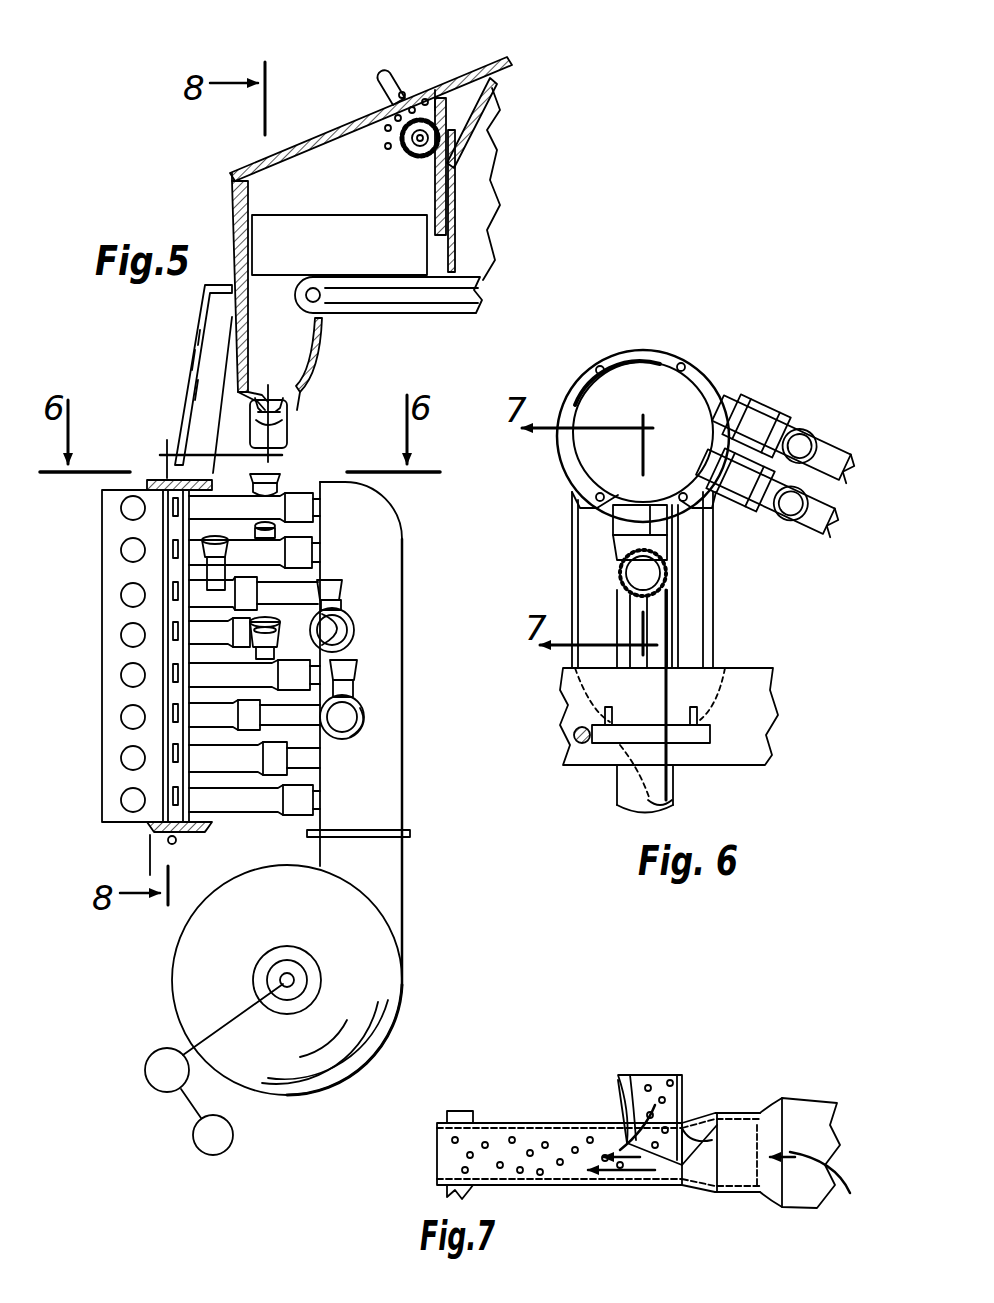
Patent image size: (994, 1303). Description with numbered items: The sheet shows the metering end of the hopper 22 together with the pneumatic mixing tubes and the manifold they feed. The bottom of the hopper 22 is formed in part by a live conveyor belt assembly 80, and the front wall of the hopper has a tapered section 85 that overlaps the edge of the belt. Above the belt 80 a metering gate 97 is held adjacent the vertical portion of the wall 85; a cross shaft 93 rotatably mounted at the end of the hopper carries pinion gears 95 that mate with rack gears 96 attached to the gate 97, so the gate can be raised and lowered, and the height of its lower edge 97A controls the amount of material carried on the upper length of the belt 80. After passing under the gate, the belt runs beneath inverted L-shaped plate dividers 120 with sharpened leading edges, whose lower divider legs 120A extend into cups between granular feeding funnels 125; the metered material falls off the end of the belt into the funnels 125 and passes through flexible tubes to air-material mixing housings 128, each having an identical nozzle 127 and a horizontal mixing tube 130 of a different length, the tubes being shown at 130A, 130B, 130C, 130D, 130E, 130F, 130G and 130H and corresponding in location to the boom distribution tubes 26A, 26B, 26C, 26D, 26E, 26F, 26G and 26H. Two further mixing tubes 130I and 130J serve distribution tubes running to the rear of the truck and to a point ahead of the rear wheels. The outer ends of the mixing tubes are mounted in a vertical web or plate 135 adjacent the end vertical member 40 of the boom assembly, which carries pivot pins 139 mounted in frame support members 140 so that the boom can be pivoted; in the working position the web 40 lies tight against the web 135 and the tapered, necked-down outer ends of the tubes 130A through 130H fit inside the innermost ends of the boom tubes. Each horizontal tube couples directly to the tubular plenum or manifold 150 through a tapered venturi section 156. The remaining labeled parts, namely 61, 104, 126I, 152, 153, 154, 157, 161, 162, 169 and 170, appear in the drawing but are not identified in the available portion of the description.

In FIG. 5, the hopper 22 is at (300, 125).
In FIG. 5, the hopper wall 61 is at (342, 120).
In FIG. 5, the drive shaft 104 is at (412, 95).
In FIG. 5, the rack gears 96 is at (440, 82).
In FIG. 5, the pinion gears 95 is at (380, 140).
In FIG. 5, the cross shaft 93 is at (416, 152).
In FIG. 5, the tapered section 85 is at (470, 120).
In FIG. 5, the metering gate 97 is at (452, 172).
In FIG. 5, the lower edge 97A is at (455, 243).
In FIG. 5, the conveyor belt assembly 80 is at (478, 282).
In FIG. 5, the plate dividers 120 is at (352, 222).
In FIG. 5, the lower divider legs 120A is at (300, 325).
In FIG. 5, the granular feeding funnels 125 is at (292, 386).
In FIG. 5, the seed cup 126I is at (288, 428).
In FIG. 5, the pivot pins 139 is at (157, 475).
In FIG. 6, the pivot pins 139 is at (572, 720).
In FIG. 5, the frame support members 140 is at (232, 858).
In FIG. 6, the frame support members 140 is at (715, 748).
In FIG. 5, the end vertical member 40 is at (117, 822).
In FIG. 5, the vertical web 135 is at (215, 818).
In FIG. 6, the vertical web 135 is at (770, 718).
In FIG. 7, the vertical web 135 is at (456, 1112).
In FIG. 5, the distribution tube 26A is at (120, 801).
In FIG. 5, the distribution tube 26B is at (120, 759).
In FIG. 5, the distribution tube 26C is at (97, 720).
In FIG. 5, the distribution tube 26D is at (120, 677).
In FIG. 5, the distribution tube 26E is at (120, 637).
In FIG. 5, the distribution tube 26F is at (120, 598).
In FIG. 5, the distribution tube 26G is at (120, 551).
In FIG. 5, the distribution tube 26H is at (120, 510).
In FIG. 6, the distribution tube 26H is at (628, 790).
In FIG. 6, the horizontal mixing tube 130 is at (660, 635).
In FIG. 5, the horizontal mixing tube 130A is at (247, 809).
In FIG. 5, the horizontal mixing tube 130B is at (242, 767).
In FIG. 5, the horizontal mixing tube 130C is at (254, 715).
In FIG. 5, the horizontal mixing tube 130D is at (247, 684).
In FIG. 5, the horizontal mixing tube 130E is at (235, 644).
In FIG. 5, the horizontal mixing tube 130F is at (200, 594).
In FIG. 5, the horizontal mixing tube 130G is at (254, 552).
In FIG. 5, the horizontal mixing tube 130H is at (247, 518).
In FIG. 6, the horizontal mixing tube 130H is at (685, 797).
In FIG. 7, the horizontal mixing tube 130H is at (498, 1187).
In FIG. 5, the horizontal mixing tube 130I is at (348, 626).
In FIG. 5, the horizontal mixing tube 130J is at (364, 716).
In FIG. 5, the nozzle 127 is at (285, 490).
In FIG. 6, the nozzle 127 is at (668, 553).
In FIG. 7, the nozzle 127 is at (620, 1090).
In FIG. 7, the air-material mixing housing 128 is at (582, 1110).
In FIG. 5, the tapered venturi section 156 is at (300, 553).
In FIG. 6, the tapered venturi section 156 is at (625, 527).
In FIG. 7, the tapered venturi section 156 is at (692, 1140).
In FIG. 5, the air hose 157 is at (322, 500).
In FIG. 7, the air hose 157 is at (770, 1195).
In FIG. 5, the plenum manifold 150 is at (393, 538).
In FIG. 6, the plenum manifold 150 is at (655, 372).
In FIG. 7, the plenum manifold 150 is at (820, 1100).
In FIG. 5, the blower belt 152 is at (388, 1000).
In FIG. 6, the blower belt 152 is at (712, 602).
In FIG. 5, the motor 153 is at (158, 1052).
In FIG. 5, the valve 154 is at (225, 1122).
In FIG. 7, the venturi throat 161 is at (706, 1113).
In FIG. 7, the venturi flange 162 is at (742, 1113).
In FIG. 7, the seed inlet 169 is at (632, 1075).
In FIG. 7, the air flow 170 is at (610, 1182).